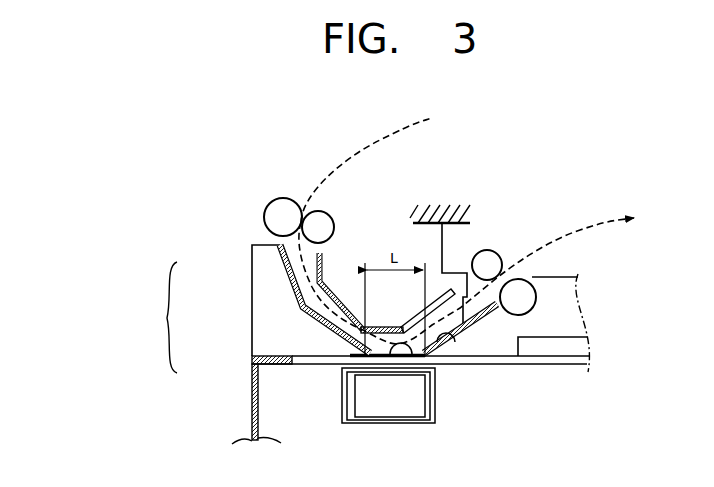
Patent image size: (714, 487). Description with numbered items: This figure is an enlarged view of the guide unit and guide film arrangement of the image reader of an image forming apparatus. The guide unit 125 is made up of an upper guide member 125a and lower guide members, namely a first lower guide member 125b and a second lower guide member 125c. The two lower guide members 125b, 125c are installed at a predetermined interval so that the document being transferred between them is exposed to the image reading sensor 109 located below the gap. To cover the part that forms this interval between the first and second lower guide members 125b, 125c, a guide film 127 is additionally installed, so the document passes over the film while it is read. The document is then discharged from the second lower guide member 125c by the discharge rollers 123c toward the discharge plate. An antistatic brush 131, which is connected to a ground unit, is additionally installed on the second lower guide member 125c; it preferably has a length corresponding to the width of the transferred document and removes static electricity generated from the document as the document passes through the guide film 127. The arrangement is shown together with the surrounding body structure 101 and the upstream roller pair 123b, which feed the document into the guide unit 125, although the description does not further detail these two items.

The main body frame 101 is at (252, 424).
The image reading sensor 109 is at (407, 408).
The feed roller pair 123b is at (268, 205).
The discharge rollers 123c is at (502, 262).
The guide unit 125 is at (155, 317).
The upper guide member 125a is at (317, 258).
The first lower guide member 125b is at (300, 306).
The second lower guide member 125c is at (352, 366).
The guide film 127 is at (388, 357).
The antistatic brush 131 is at (470, 334).